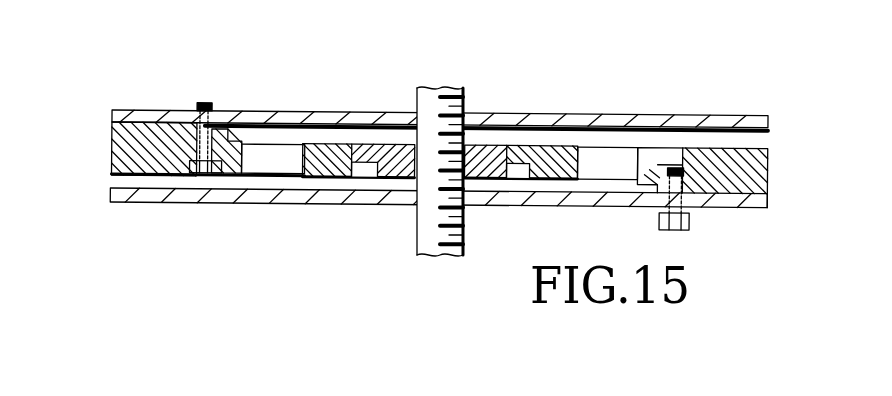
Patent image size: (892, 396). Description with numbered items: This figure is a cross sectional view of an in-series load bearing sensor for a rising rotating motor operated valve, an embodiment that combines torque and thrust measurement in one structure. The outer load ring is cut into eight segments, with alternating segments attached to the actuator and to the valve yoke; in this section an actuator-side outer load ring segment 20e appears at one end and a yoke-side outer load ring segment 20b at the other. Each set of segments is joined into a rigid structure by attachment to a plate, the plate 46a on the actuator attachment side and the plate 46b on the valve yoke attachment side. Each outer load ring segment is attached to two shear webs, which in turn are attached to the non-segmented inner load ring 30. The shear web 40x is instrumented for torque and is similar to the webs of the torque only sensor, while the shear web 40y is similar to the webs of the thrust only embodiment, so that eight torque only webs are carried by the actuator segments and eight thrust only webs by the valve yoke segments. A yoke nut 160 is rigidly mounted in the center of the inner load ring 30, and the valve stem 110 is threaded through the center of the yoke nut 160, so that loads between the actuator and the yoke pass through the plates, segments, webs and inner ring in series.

The plate 46a is at (112, 115).
The plate 46b is at (218, 203).
The outer load ring segment 20e is at (112, 153).
The outer load ring segment 20b is at (770, 183).
The shear web 40x is at (263, 148).
The shear web 40y is at (595, 157).
The inner load ring 30 is at (327, 148).
The yoke nut 160 is at (415, 118).
The valve stem 110 is at (443, 87).